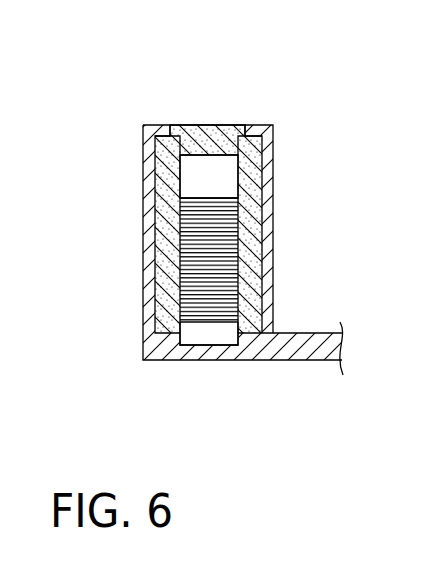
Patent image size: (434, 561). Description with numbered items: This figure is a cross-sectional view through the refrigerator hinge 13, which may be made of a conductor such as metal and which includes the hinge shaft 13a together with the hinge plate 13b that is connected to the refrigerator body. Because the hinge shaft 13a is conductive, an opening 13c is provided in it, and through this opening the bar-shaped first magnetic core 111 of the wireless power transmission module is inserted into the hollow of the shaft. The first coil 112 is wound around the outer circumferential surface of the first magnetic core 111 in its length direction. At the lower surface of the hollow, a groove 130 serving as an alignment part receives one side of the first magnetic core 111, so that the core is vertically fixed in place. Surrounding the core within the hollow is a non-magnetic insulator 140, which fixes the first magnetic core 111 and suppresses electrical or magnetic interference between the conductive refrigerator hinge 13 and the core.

The refrigerator hinge 13 is at (213, 224).
The hinge shaft 13a is at (150, 298).
The hinge plate 13b is at (302, 350).
The opening 13c is at (233, 125).
The non-magnetic insulator 140 is at (158, 246).
The first magnetic core 111 is at (197, 167).
The first coil 112 is at (196, 213).
The groove 130 is at (217, 333).